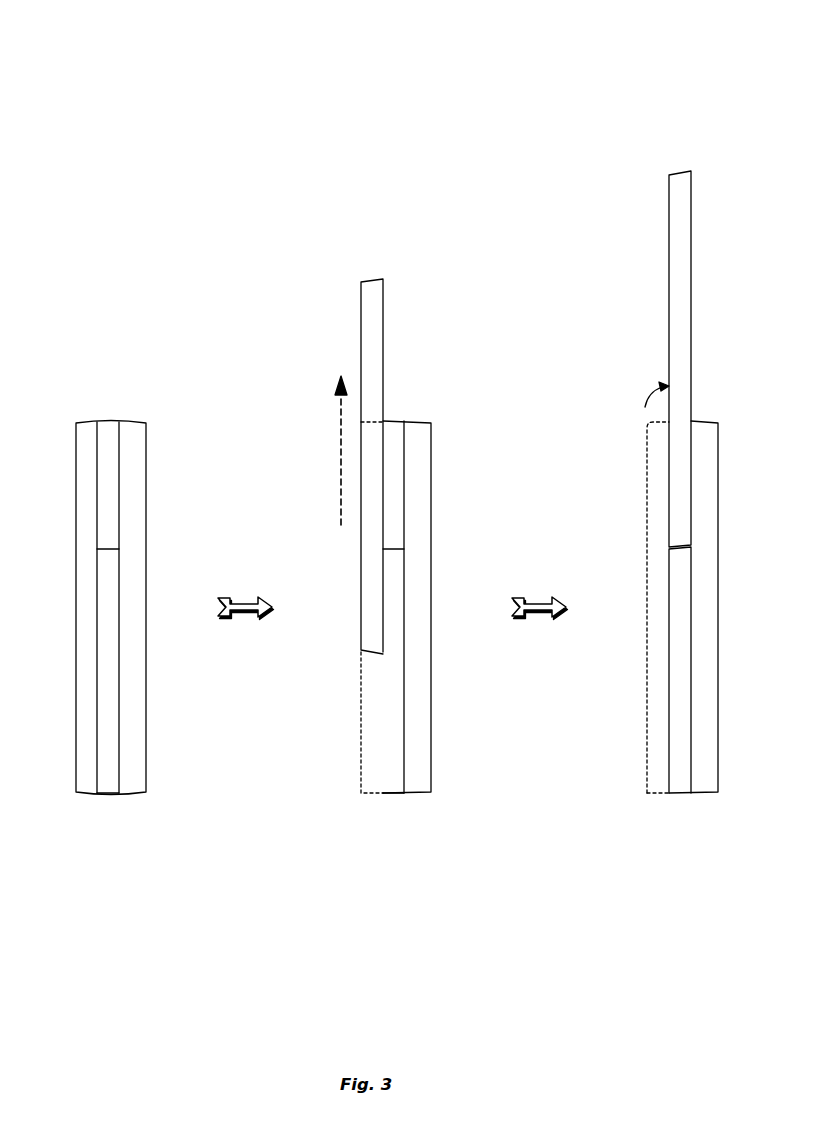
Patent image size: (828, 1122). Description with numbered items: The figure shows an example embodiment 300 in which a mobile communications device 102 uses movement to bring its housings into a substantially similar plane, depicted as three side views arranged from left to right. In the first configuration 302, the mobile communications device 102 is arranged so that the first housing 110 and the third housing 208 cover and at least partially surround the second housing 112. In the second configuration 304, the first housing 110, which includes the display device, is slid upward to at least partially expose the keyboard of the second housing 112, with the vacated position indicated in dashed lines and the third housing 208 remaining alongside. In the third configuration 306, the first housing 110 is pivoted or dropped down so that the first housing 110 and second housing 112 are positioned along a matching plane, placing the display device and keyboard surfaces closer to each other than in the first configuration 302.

The example embodiment 300 is at (155, 80).
The first configuration 302 is at (81, 846).
The second configuration 304 is at (367, 846).
The third configuration 306 is at (660, 844).
The mobile communications device 102 is at (146, 422).
The first housing 110 is at (76, 422).
The third housing 208 is at (140, 670).
The second housing 112 is at (108, 795).